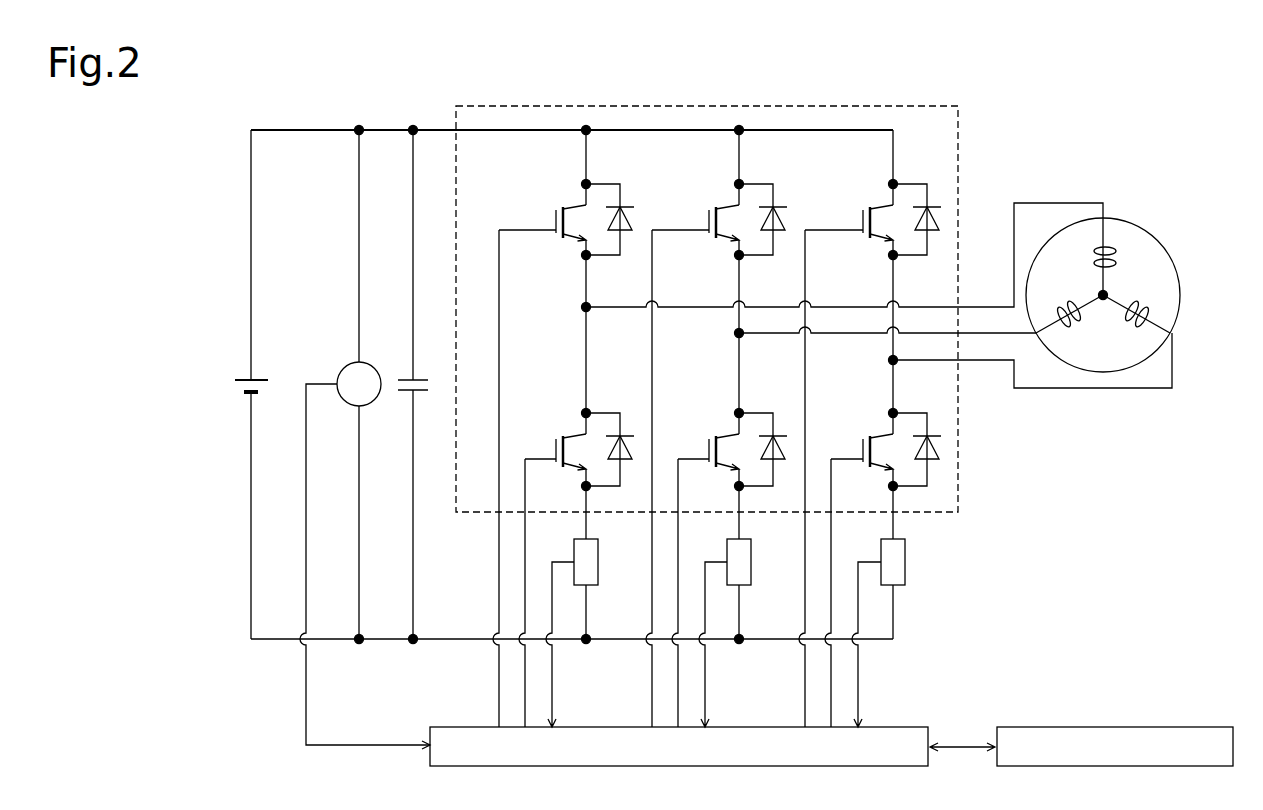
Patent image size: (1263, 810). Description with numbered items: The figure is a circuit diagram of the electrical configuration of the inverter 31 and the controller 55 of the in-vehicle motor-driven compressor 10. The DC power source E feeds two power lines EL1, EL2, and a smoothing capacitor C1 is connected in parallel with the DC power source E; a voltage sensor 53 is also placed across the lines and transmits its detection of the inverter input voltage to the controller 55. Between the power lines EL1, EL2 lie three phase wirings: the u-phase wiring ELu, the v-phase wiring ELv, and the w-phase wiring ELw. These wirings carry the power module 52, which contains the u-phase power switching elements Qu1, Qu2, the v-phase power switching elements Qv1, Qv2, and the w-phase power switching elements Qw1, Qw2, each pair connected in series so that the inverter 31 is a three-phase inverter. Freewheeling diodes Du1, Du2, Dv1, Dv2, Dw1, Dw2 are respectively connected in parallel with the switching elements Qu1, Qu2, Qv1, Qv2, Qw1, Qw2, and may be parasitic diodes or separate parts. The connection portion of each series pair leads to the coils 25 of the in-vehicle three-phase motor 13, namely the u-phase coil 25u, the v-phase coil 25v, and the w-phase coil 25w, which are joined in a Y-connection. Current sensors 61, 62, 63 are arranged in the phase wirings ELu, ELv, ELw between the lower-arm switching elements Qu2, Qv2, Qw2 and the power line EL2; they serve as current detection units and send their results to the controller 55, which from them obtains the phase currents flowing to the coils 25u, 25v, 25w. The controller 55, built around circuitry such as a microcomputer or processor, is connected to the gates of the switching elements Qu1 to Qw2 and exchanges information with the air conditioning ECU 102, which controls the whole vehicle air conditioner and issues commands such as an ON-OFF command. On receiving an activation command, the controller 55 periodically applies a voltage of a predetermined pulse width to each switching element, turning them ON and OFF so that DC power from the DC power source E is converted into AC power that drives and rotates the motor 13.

The in-vehicle motor-driven compressor 10 is at (1115, 152).
The in-vehicle three-phase motor 13 is at (1113, 218).
The coils 25 is at (1164, 291).
The u-phase coil 25u is at (1113, 255).
The v-phase coil 25v is at (1074, 320).
The w-phase coil 25w is at (1142, 306).
The inverter 31 is at (986, 132).
The power module 52 is at (716, 106).
The voltage sensor 53 is at (346, 368).
The controller 55 is at (925, 727).
The current sensor 61 is at (598, 562).
The current sensor 62 is at (751, 562).
The current sensor 63 is at (905, 562).
The air conditioning ECU 102 is at (1207, 727).
The DC power source E is at (244, 378).
The smoothing capacitor C1 is at (404, 378).
The power line EL1 is at (537, 128).
The power line EL2 is at (431, 641).
The u-phase wiring ELu is at (586, 343).
The v-phase wiring ELv is at (739, 360).
The w-phase wiring ELw is at (893, 378).
The u-phase power switching element Qu1 is at (554, 210).
The u-phase power switching element Qu2 is at (554, 439).
The v-phase power switching element Qv1 is at (707, 210).
The v-phase power switching element Qv2 is at (707, 439).
The w-phase power switching element Qw1 is at (861, 210).
The w-phase power switching element Qw2 is at (861, 439).
The freewheeling diode Du1 is at (628, 207).
The freewheeling diode Du2 is at (628, 436).
The freewheeling diode Dv1 is at (781, 207).
The freewheeling diode Dv2 is at (781, 436).
The freewheeling diode Dw1 is at (935, 207).
The freewheeling diode Dw2 is at (935, 436).